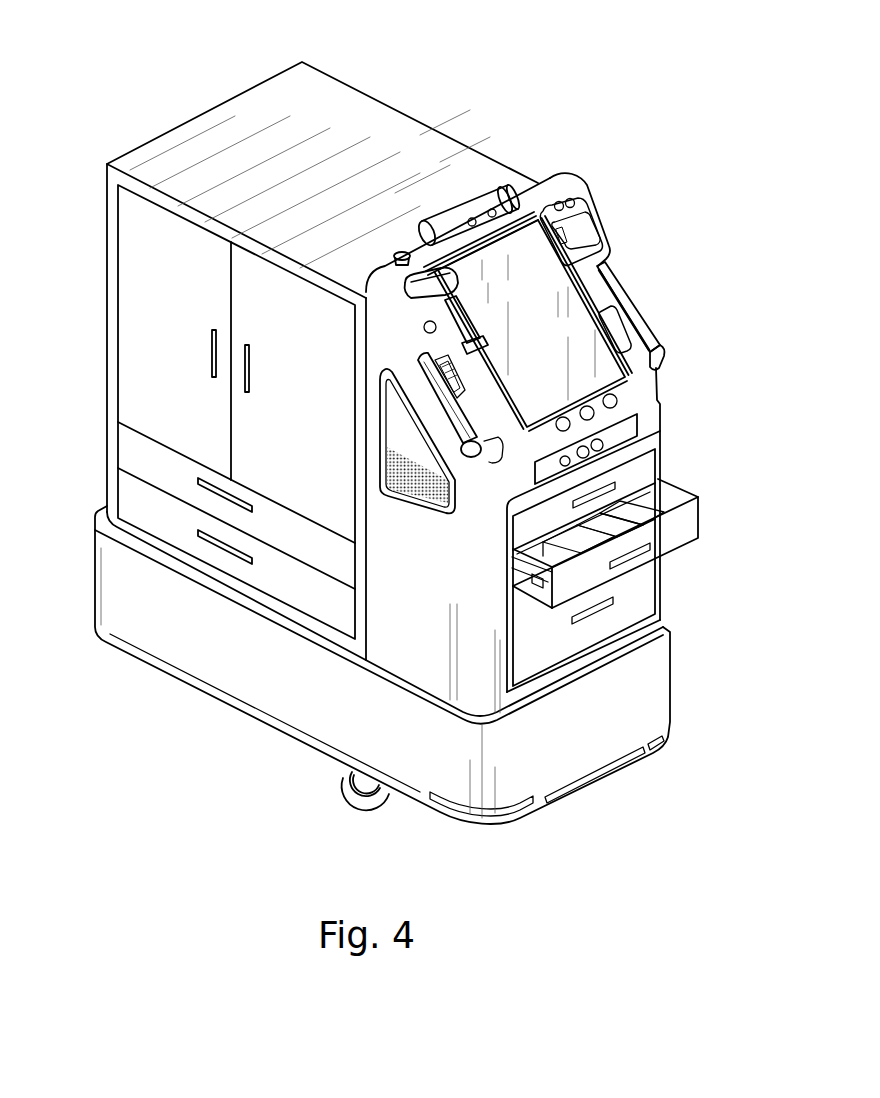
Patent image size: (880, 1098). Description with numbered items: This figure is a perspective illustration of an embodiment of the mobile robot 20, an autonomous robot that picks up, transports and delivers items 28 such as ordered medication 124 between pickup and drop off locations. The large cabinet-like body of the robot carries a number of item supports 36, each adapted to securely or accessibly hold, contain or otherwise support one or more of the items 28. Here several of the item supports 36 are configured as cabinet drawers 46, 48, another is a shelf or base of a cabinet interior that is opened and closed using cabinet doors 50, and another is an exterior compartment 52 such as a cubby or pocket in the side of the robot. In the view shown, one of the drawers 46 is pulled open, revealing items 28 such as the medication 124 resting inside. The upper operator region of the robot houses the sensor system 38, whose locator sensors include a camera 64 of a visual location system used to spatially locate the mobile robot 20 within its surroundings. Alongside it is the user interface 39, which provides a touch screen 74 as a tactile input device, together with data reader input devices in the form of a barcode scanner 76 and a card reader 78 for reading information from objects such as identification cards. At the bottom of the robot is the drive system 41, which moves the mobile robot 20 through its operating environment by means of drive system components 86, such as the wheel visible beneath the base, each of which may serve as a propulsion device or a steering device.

The mobile robot 20 is at (510, 98).
The item supports 36 is at (150, 190).
The sensor system 38 is at (475, 182).
The user interface 39 is at (537, 195).
The drive system 41 is at (335, 802).
The drawer 46 is at (650, 462).
The drawer 48 is at (127, 449).
The cabinet door 50 is at (127, 292).
The exterior compartment 52 is at (380, 418).
The camera 64 is at (462, 213).
The touch screen 74 is at (553, 283).
The barcode scanner 76 is at (428, 314).
The card reader 78 is at (631, 314).
The drive system component 86 is at (378, 803).
The items 28 is at (652, 530).
The medication 124 is at (667, 492).